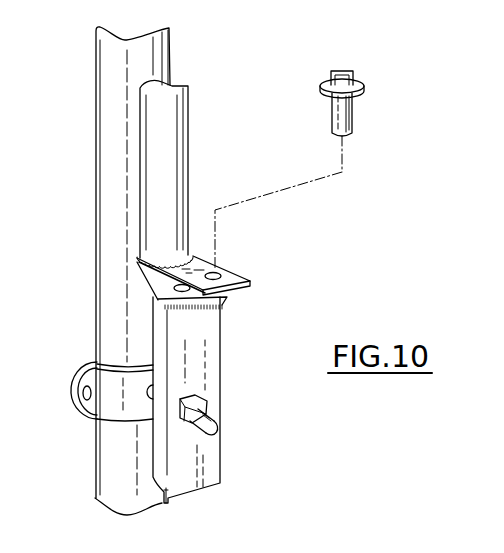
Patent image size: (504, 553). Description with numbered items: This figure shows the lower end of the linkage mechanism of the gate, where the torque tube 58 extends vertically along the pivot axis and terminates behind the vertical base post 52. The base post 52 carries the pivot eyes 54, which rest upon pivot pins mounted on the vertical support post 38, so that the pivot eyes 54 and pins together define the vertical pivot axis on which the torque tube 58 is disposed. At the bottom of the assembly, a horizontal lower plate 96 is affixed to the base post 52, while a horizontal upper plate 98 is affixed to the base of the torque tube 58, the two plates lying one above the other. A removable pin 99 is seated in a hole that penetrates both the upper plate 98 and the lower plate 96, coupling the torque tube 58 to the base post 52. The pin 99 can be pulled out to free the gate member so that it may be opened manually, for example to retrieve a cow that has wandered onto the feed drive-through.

The vertical support post 38 is at (110, 245).
The vertical base post 52 is at (222, 397).
The pivot eyes 54 is at (147, 391).
The torque tube 58 is at (178, 165).
The horizontal lower plate 96 is at (222, 297).
The horizontal upper plate 98 is at (222, 270).
The removable pin 99 is at (353, 118).